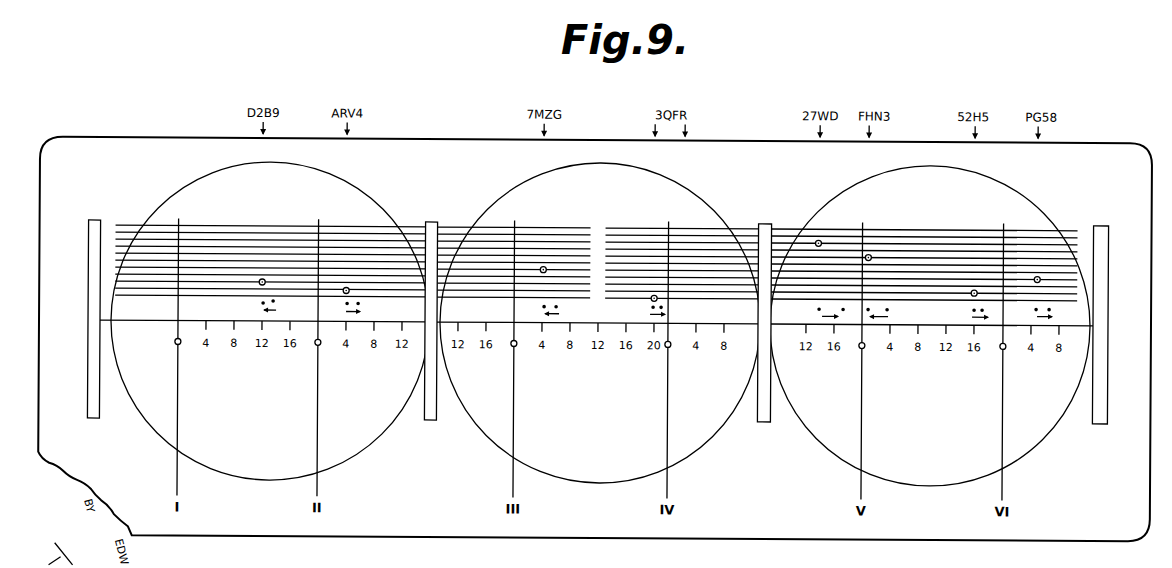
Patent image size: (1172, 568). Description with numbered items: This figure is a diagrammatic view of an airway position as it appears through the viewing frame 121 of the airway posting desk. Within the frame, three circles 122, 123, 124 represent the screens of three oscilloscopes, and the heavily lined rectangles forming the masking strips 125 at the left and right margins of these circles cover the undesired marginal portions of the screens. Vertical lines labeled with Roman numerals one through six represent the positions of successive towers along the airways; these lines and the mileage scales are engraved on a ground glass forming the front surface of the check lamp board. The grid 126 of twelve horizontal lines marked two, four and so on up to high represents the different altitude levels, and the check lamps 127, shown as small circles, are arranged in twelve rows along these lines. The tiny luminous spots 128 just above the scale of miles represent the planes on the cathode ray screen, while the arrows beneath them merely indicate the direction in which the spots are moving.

The viewing frame 121 is at (579, 530).
The oscilloscope screen 122 is at (150, 427).
The oscilloscope screen 123 is at (488, 437).
The oscilloscope screen 124 is at (815, 436).
The masking strips 125 is at (88, 223).
The grid 126 is at (265, 224).
The check lamps 127 is at (259, 285).
The luminous spots 128 is at (352, 305).